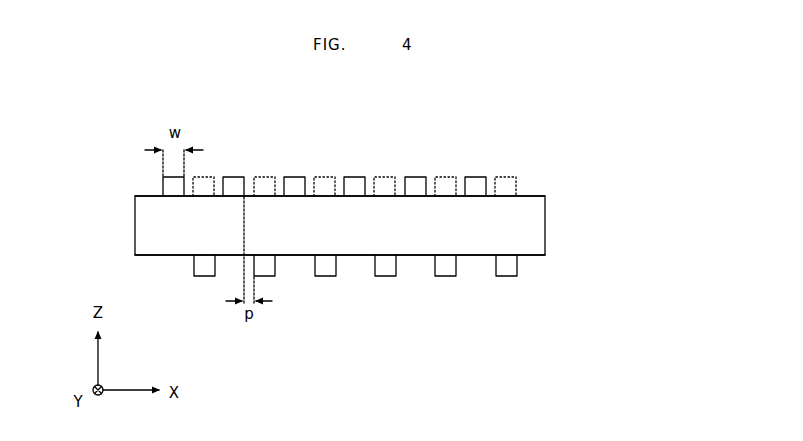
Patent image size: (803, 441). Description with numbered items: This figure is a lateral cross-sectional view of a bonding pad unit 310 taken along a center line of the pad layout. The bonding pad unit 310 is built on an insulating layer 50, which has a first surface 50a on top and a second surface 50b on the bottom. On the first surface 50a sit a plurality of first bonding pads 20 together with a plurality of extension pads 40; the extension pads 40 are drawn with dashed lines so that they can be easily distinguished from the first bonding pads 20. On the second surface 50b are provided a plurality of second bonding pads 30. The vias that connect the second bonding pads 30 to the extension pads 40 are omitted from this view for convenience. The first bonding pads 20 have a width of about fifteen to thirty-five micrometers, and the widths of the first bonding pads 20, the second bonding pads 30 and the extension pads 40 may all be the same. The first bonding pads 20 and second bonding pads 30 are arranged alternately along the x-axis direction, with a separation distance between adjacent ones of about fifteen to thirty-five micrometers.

The bonding pad unit 310 is at (552, 126).
The insulating layer 50 is at (546, 225).
The first surface 50a is at (135, 196).
The second surface 50b is at (135, 255).
The first bonding pads 20 is at (475, 177).
The extension pads 40 is at (385, 177).
The second bonding pads 30 is at (504, 272).